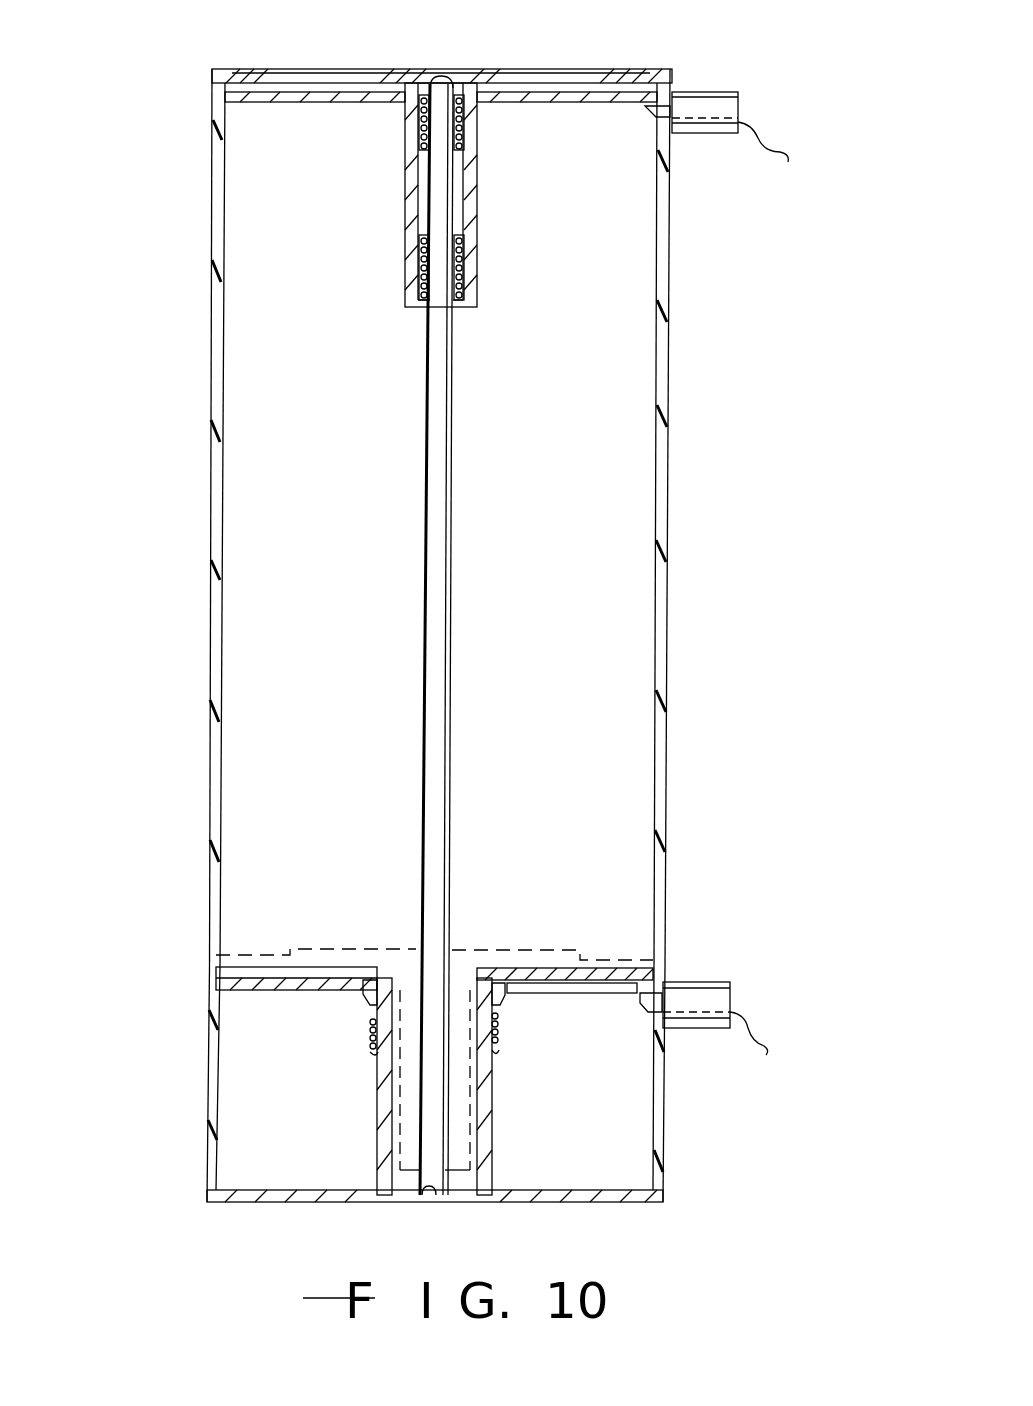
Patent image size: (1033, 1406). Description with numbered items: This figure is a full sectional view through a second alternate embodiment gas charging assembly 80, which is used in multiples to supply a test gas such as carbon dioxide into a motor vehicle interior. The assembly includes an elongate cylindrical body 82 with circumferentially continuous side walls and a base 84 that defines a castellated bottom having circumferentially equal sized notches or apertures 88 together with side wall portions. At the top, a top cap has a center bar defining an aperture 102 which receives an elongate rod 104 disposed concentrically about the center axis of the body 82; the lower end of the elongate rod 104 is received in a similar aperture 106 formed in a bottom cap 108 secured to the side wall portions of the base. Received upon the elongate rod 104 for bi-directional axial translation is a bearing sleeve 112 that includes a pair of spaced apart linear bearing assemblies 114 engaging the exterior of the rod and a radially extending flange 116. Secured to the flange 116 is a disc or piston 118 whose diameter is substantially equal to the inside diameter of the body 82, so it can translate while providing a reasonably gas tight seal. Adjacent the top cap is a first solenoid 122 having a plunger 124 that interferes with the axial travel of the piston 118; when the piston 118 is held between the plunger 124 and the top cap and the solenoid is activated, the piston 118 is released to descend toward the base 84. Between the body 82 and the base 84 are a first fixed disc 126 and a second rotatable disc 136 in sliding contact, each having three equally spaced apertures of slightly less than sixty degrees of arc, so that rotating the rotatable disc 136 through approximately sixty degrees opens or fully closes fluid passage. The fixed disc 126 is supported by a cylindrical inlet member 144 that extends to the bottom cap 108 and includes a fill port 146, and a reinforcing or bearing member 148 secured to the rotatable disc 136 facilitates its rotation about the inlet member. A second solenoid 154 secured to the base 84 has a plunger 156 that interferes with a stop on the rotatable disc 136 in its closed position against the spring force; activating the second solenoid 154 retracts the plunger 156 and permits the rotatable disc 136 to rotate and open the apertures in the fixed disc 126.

The gas charging assembly 80 is at (180, 106).
The elongate cylindrical body 82 is at (656, 392).
The base 84 is at (665, 1090).
The notches or apertures 88 is at (207, 1131).
The aperture 102 is at (482, 70).
The elongate rod 104 is at (442, 432).
The aperture 106 is at (423, 1203).
The bottom cap 108 is at (567, 1203).
The bearing sleeve 112 is at (470, 165).
The linear bearing assemblies 114 is at (478, 116).
The radially extending flange 116 is at (322, 83).
The disc or piston 118 is at (253, 103).
The first solenoid 122 is at (728, 110).
The plunger 124 is at (663, 112).
The first fixed disc 126 is at (520, 968).
The second rotatable disc 136 is at (277, 992).
The cylindrical inlet member 144 is at (484, 1146).
The fill port 146 is at (377, 1073).
The reinforcing or bearing member 148 is at (500, 1004).
The second solenoid 154 is at (703, 1000).
The plunger 156 is at (618, 993).